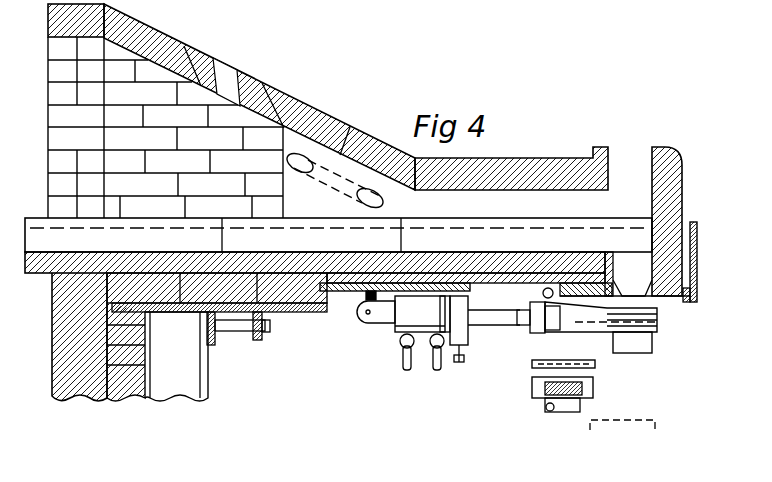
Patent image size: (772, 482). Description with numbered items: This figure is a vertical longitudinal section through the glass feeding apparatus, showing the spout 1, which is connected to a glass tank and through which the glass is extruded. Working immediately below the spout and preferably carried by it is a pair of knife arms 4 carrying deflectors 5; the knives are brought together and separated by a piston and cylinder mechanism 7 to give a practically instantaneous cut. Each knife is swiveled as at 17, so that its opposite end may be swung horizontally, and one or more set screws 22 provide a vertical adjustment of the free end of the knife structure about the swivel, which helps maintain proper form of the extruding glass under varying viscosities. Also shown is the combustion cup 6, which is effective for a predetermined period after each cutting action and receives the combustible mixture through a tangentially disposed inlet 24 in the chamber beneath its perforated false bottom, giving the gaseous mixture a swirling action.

The spout 1 is at (679, 165).
The deflectors 5 is at (470, 237).
The swivel 17 is at (358, 316).
The piston and cylinder mechanism 7 is at (415, 310).
The set screws 22 is at (462, 356).
The knife arms 4 is at (600, 318).
The combustion cup 6 is at (534, 366).
The inlet 24 is at (546, 408).